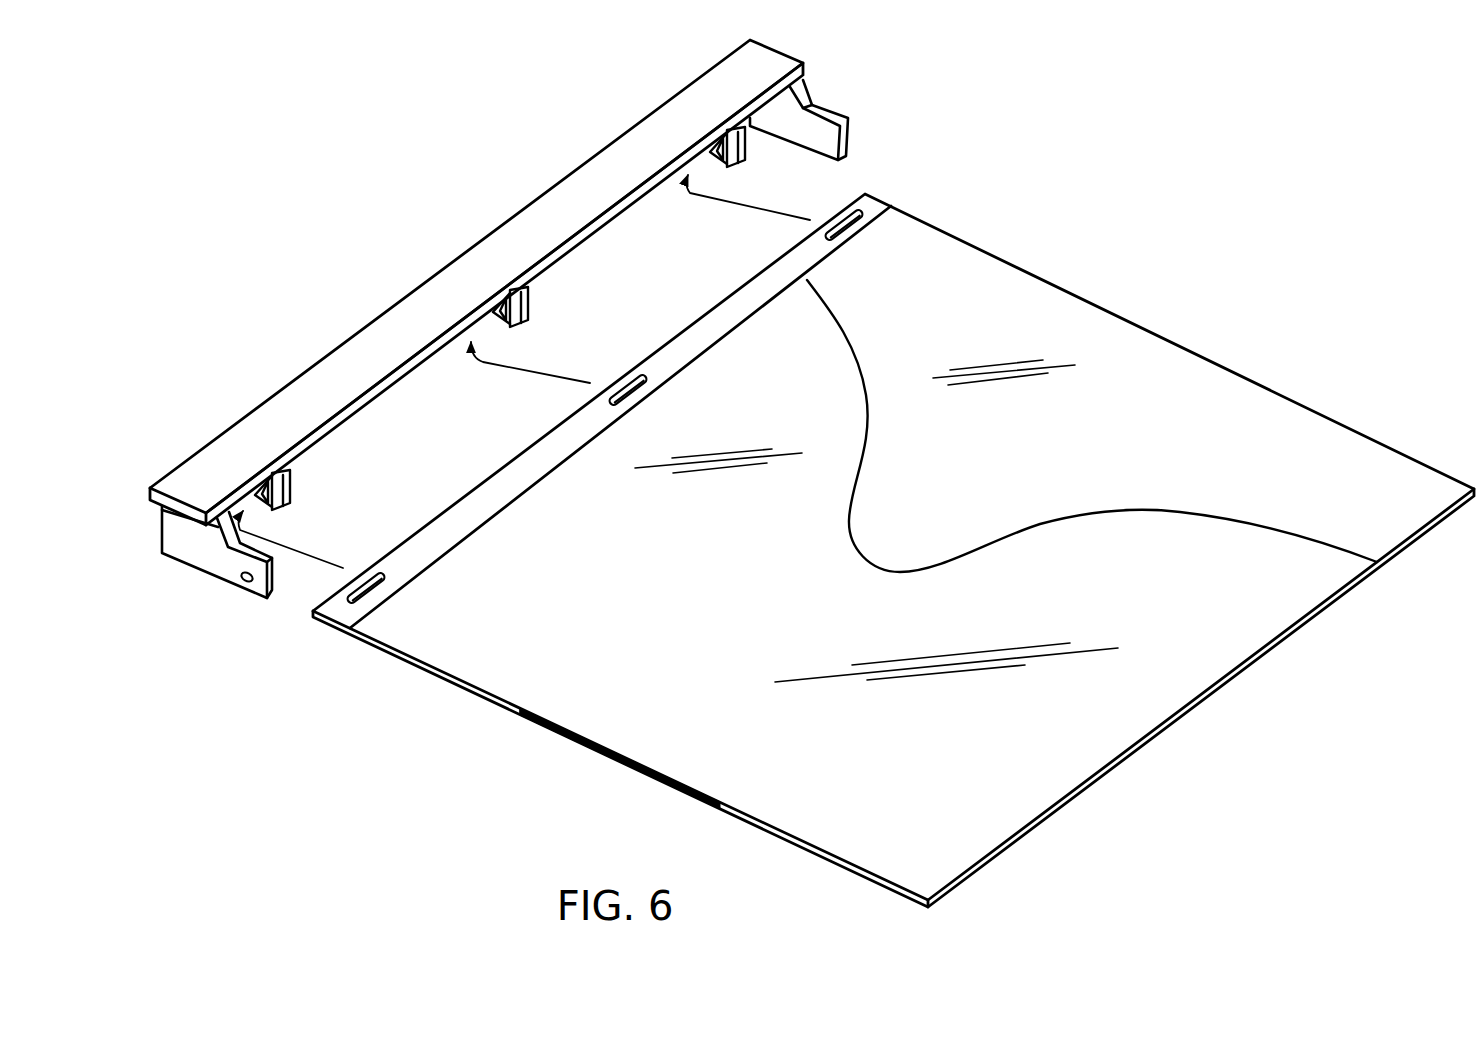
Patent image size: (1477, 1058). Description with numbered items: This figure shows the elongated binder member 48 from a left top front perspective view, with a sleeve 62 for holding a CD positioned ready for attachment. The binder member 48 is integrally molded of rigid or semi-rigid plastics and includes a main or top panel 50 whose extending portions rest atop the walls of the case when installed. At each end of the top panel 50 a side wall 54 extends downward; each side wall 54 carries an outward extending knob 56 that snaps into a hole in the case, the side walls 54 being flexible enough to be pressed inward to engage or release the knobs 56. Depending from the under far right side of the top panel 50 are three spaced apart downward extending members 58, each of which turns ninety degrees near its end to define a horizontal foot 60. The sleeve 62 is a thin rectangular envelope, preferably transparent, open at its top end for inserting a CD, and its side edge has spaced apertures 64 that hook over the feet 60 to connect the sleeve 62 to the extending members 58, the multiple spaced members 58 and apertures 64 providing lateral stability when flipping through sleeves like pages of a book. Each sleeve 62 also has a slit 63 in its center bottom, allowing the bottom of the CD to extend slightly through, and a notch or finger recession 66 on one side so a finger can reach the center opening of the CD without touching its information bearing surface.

The binder member 48 is at (519, 368).
The top panel 50 is at (445, 295).
The side wall 54 is at (808, 100).
The knob 56 is at (245, 582).
The extending member 58 is at (283, 492).
The foot 60 is at (493, 333).
The sleeve 62 is at (893, 521).
The slit 63 is at (590, 743).
The aperture 64 is at (868, 212).
The finger recession 66 is at (1188, 503).